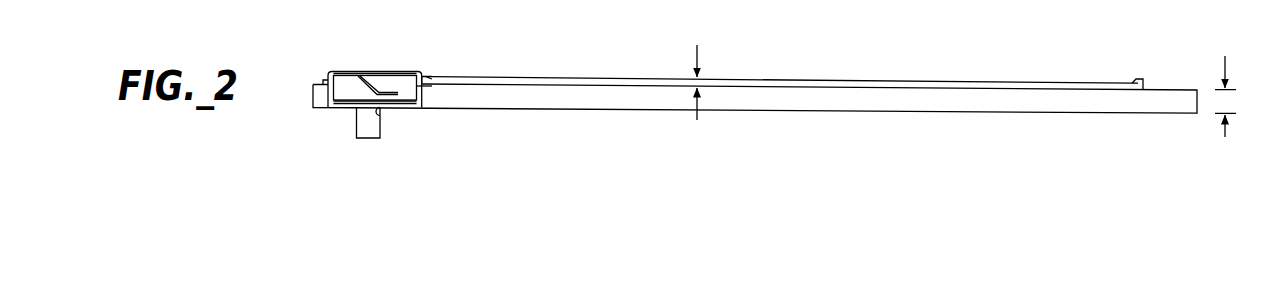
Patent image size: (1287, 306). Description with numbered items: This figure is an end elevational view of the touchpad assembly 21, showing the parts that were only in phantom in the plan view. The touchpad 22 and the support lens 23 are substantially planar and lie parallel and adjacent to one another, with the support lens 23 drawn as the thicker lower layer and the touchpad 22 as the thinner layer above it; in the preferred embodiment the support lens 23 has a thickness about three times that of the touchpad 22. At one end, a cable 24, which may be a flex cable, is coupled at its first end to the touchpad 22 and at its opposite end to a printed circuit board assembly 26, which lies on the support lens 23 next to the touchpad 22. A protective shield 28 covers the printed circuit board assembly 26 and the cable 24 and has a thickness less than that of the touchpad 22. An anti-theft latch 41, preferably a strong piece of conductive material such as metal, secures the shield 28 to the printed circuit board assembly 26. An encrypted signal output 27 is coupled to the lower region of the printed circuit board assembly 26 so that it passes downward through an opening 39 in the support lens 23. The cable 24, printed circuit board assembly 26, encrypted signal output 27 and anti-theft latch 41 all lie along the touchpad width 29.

The touchpad assembly 21 is at (1066, 56).
The touchpad 22 is at (866, 77).
The support lens 23 is at (310, 98).
The cable 24 is at (424, 88).
The printed circuit board assembly 26 is at (342, 104).
The encrypted signal output 27 is at (354, 130).
The protective shield 28 is at (401, 67).
The touchpad width 29 is at (372, 66).
The opening 39 is at (382, 113).
The anti-theft latch 41 is at (384, 90).